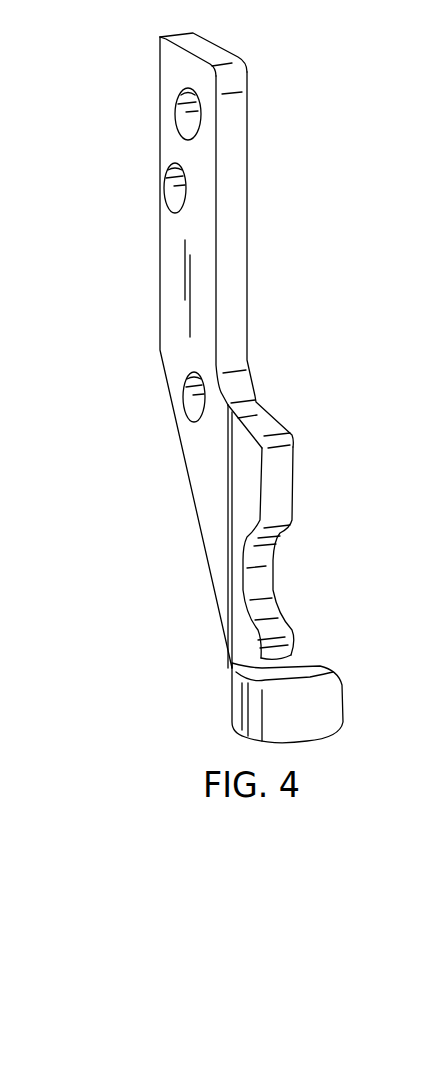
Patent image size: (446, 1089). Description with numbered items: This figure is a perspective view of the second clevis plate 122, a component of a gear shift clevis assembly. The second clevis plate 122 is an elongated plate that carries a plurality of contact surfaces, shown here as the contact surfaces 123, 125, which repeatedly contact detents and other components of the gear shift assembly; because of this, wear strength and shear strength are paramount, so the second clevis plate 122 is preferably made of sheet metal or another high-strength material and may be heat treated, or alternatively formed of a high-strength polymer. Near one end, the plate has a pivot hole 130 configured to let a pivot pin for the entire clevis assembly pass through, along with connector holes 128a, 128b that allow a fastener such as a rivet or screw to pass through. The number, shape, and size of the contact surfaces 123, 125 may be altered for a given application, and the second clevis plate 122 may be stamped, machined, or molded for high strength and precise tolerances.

The second clevis plate 122 is at (210, 553).
The contact surface 123 is at (343, 703).
The contact surface 125 is at (283, 598).
The connector hole 128a is at (166, 195).
The connector hole 128b is at (185, 400).
The pivot hole 130 is at (174, 120).